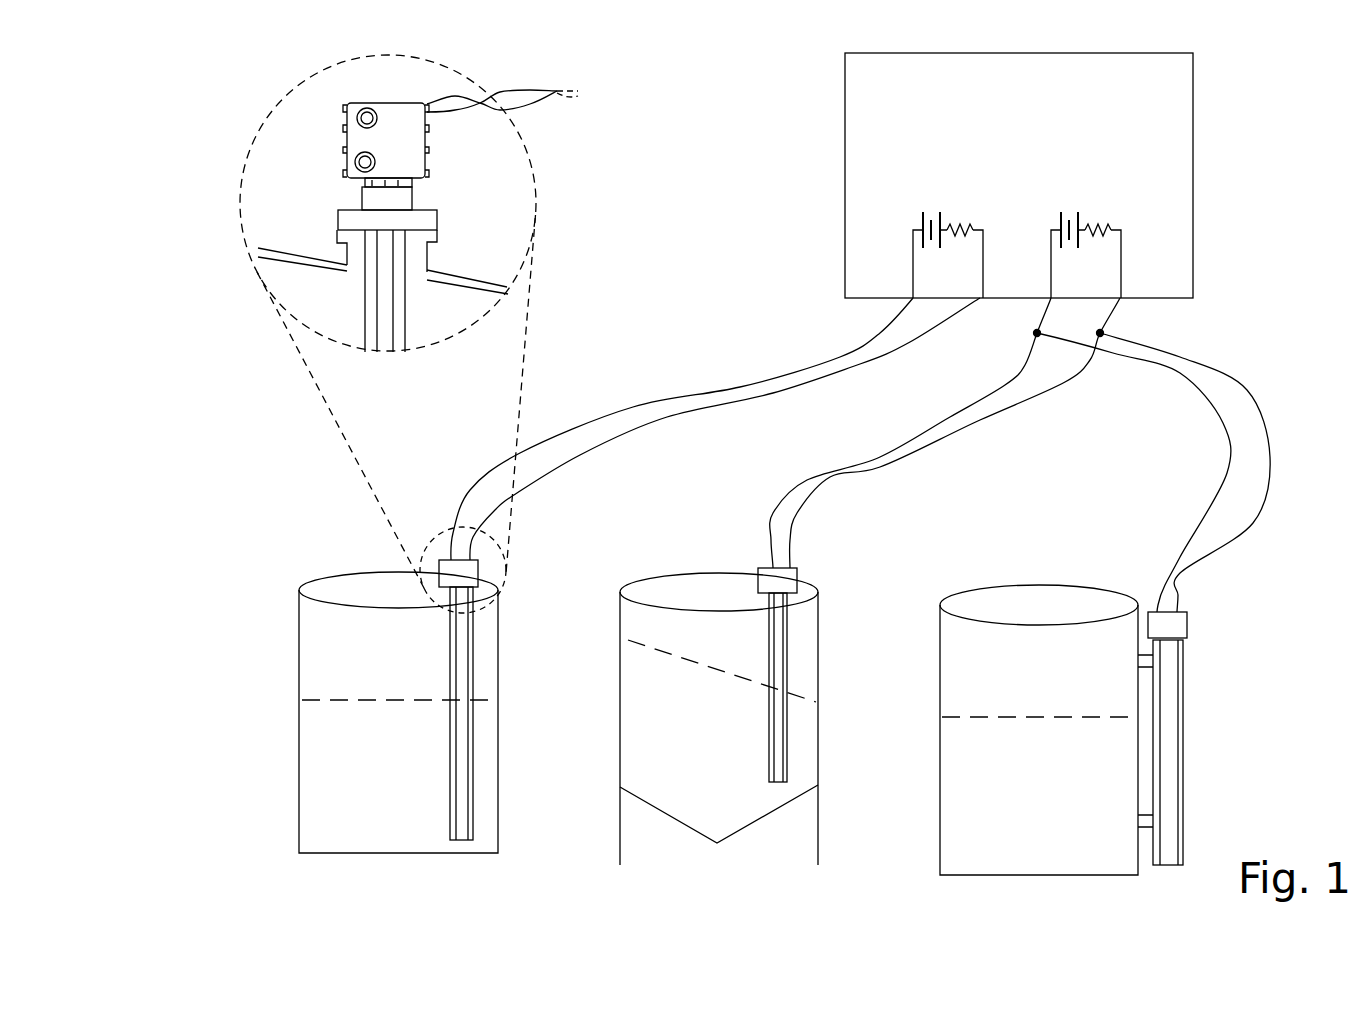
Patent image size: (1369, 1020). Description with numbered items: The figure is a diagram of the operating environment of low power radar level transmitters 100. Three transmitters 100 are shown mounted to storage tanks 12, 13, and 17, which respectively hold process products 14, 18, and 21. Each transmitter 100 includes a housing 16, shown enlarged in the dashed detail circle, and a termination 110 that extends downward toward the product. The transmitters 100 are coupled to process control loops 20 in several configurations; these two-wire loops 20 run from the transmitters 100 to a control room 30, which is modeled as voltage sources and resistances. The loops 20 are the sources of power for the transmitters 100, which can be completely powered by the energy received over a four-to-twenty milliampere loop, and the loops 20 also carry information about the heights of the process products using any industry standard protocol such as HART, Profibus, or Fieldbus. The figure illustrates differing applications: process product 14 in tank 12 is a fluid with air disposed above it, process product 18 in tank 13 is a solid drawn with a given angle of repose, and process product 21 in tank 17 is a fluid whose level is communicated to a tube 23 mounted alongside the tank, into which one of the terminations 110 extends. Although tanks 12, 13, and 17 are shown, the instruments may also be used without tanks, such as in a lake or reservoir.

The storage tank 12 is at (298, 650).
The storage tank 13 is at (819, 732).
The process product 14 is at (346, 772).
The housing 16 is at (357, 103).
The storage tank 17 is at (940, 790).
The process product 18 is at (676, 722).
The process control loop 20 is at (507, 92).
The process product 21 is at (1030, 774).
The tube 23 is at (1183, 722).
The control room 30 is at (1012, 148).
The low power radar level transmitter 100 is at (462, 145).
The termination 110 is at (436, 309).